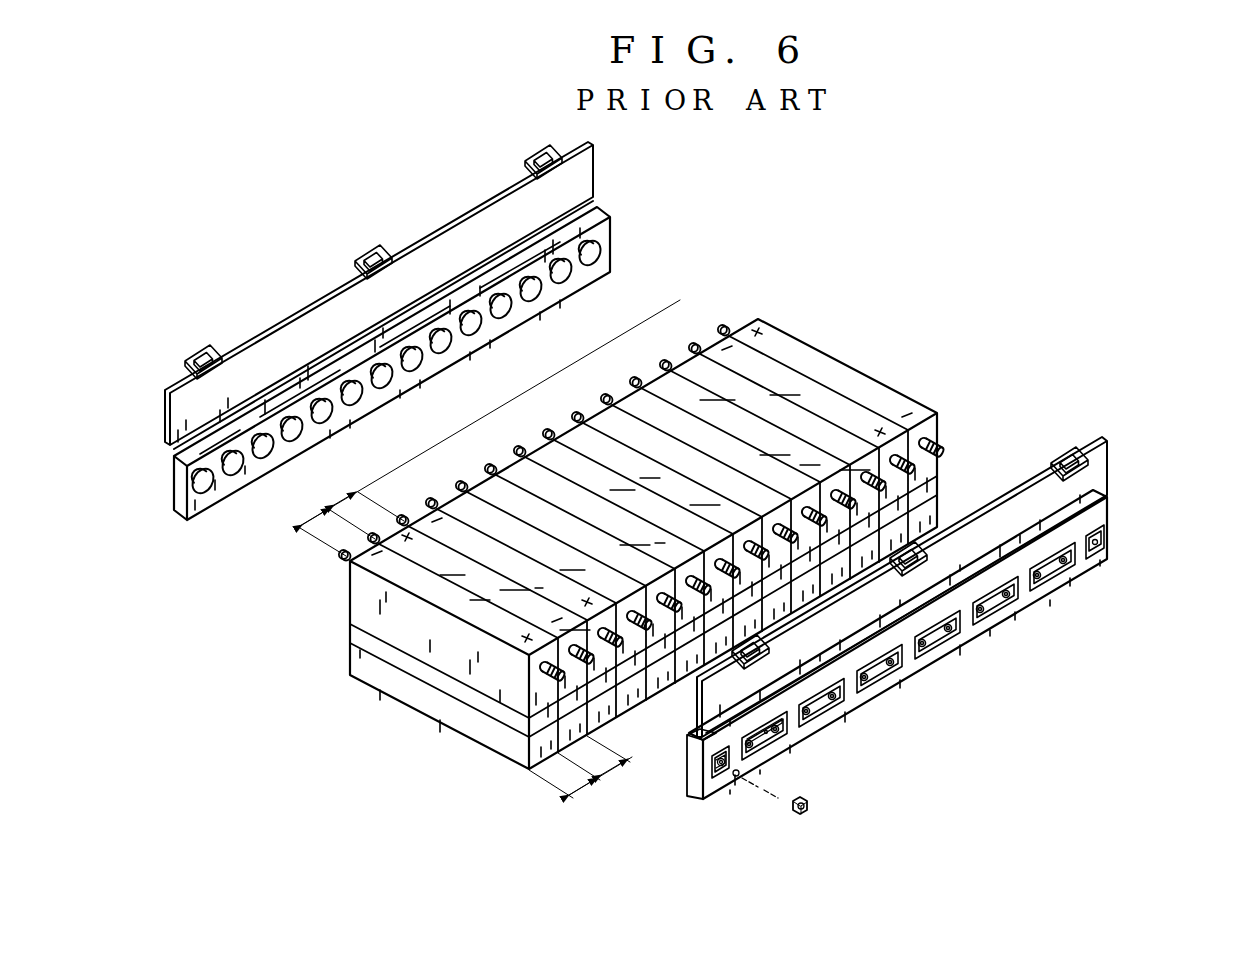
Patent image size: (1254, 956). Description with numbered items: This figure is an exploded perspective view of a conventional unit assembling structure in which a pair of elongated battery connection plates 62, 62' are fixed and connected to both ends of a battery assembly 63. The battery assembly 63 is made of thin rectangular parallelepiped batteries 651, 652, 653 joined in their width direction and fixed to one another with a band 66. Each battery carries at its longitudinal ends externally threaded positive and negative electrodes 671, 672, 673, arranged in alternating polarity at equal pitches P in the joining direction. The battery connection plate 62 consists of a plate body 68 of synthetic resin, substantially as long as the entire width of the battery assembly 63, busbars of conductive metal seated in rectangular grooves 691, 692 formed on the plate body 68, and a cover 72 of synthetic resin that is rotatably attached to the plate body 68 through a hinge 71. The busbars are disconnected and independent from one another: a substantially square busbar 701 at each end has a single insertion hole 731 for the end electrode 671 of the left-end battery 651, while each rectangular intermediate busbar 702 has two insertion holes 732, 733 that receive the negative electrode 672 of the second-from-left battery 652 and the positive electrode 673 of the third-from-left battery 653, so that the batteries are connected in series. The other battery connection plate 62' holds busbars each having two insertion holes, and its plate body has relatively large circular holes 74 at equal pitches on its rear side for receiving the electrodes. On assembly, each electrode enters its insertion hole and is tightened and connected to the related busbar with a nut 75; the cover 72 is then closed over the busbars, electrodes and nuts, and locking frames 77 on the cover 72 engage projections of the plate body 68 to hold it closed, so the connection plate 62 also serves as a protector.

The battery connection plate 62' is at (442, 339).
The circular holes 74 is at (208, 486).
The battery assembly 63 is at (617, 548).
The band 66 is at (392, 655).
The battery 651 is at (363, 588).
The battery 652 is at (430, 555).
The battery 653 is at (478, 540).
The electrode 671 is at (540, 672).
The electrode 672 is at (562, 655).
The electrode 673 is at (558, 630).
The pitch P is at (488, 559).
The cover 72 is at (897, 571).
The locking frames 77 is at (1058, 484).
The hinge 71 is at (697, 708).
The battery connection plate 62 is at (919, 673).
The plate body 68 is at (690, 802).
The busbar 701 is at (714, 801).
The busbar 702 is at (794, 730).
The insertion hole 731 is at (712, 760).
The insertion hole 732 is at (747, 737).
The insertion hole 733 is at (775, 715).
The rectangular groove 691 is at (724, 764).
The rectangular groove 692 is at (768, 734).
The nut 75 is at (809, 806).